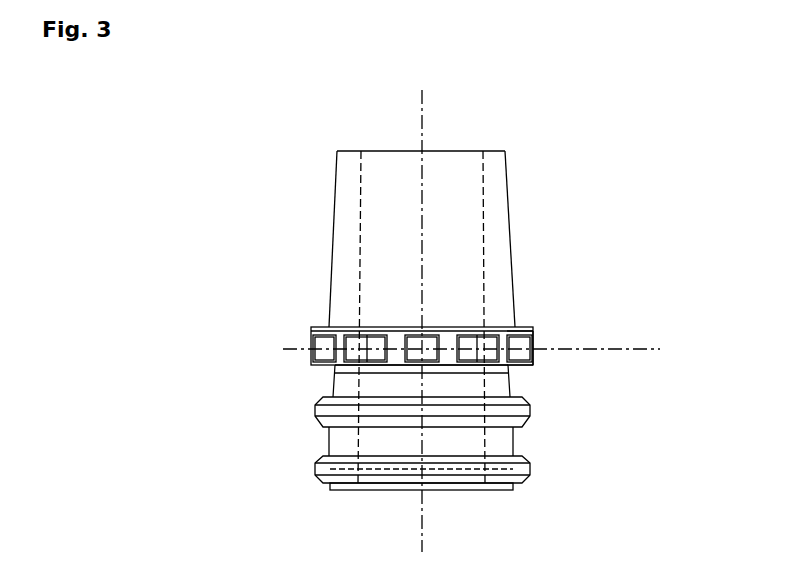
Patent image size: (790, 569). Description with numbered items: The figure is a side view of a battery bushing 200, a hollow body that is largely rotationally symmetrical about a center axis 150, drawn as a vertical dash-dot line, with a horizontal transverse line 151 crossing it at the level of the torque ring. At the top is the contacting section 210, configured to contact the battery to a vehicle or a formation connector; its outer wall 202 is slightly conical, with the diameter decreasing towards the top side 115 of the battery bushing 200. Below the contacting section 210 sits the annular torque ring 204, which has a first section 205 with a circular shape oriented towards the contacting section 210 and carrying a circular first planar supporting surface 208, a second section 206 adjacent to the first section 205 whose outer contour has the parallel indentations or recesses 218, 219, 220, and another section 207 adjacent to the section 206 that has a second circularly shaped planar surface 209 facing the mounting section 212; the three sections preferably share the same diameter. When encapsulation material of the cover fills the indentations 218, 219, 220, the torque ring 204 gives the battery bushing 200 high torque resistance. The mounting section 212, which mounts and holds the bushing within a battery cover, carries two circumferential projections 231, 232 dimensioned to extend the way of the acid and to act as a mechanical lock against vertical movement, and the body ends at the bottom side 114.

The bottom side 114 is at (506, 491).
The top side 115 is at (490, 150).
The center axis 150 is at (420, 101).
The transverse axis 151 is at (645, 349).
The battery bushing 200 is at (528, 152).
The outer wall 202 is at (519, 197).
The torque ring 204 is at (306, 327).
The first section 205 is at (533, 333).
The second section 206 is at (534, 345).
The another section 207 is at (534, 364).
The first planar supporting surface 208 is at (526, 328).
The second circularly shaped planar surface 209 is at (517, 368).
The contacting section 210 is at (513, 238).
The mounting section 212 is at (548, 452).
The indentation 218 is at (415, 342).
The indentation 219 is at (352, 345).
The indentation 220 is at (311, 355).
The circumferential projection 231 is at (315, 408).
The circumferential projection 232 is at (315, 465).